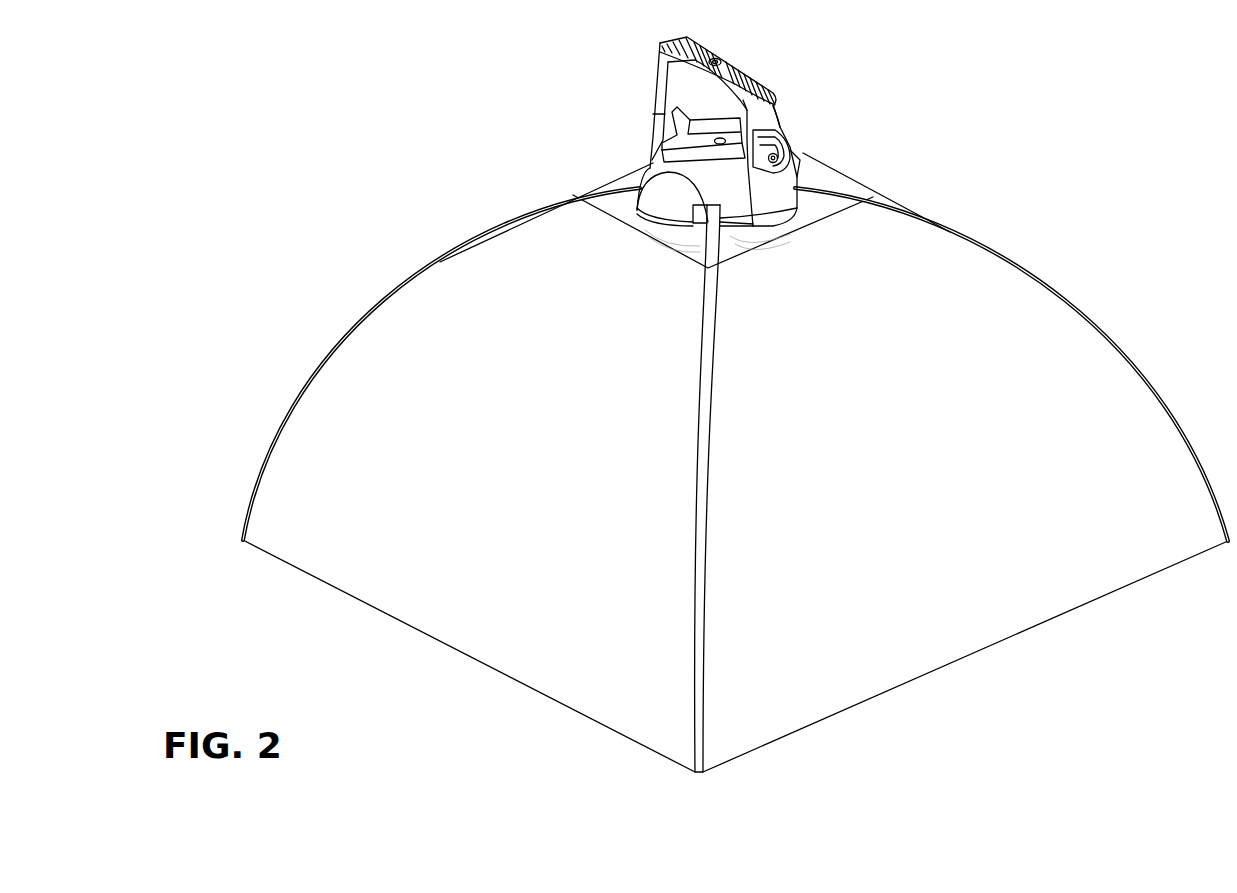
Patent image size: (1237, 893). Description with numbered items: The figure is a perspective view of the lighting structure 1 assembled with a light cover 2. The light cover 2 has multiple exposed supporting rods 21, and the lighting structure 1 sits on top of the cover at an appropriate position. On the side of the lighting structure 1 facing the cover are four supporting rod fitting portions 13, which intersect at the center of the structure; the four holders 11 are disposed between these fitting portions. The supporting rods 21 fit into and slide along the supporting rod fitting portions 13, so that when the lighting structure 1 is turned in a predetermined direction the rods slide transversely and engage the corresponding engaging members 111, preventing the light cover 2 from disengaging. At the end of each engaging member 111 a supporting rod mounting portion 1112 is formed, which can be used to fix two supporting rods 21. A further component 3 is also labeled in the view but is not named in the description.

The lighting structure 1 is at (727, 131).
The light cover 2 is at (1033, 323).
The support rod 3 is at (640, 237).
The holders 11 is at (640, 178).
The supporting rod fitting portions 13 is at (640, 172).
The supporting rods 21 is at (873, 195).
The engaging members 111 is at (760, 227).
The supporting rod mounting portion 1112 is at (648, 253).